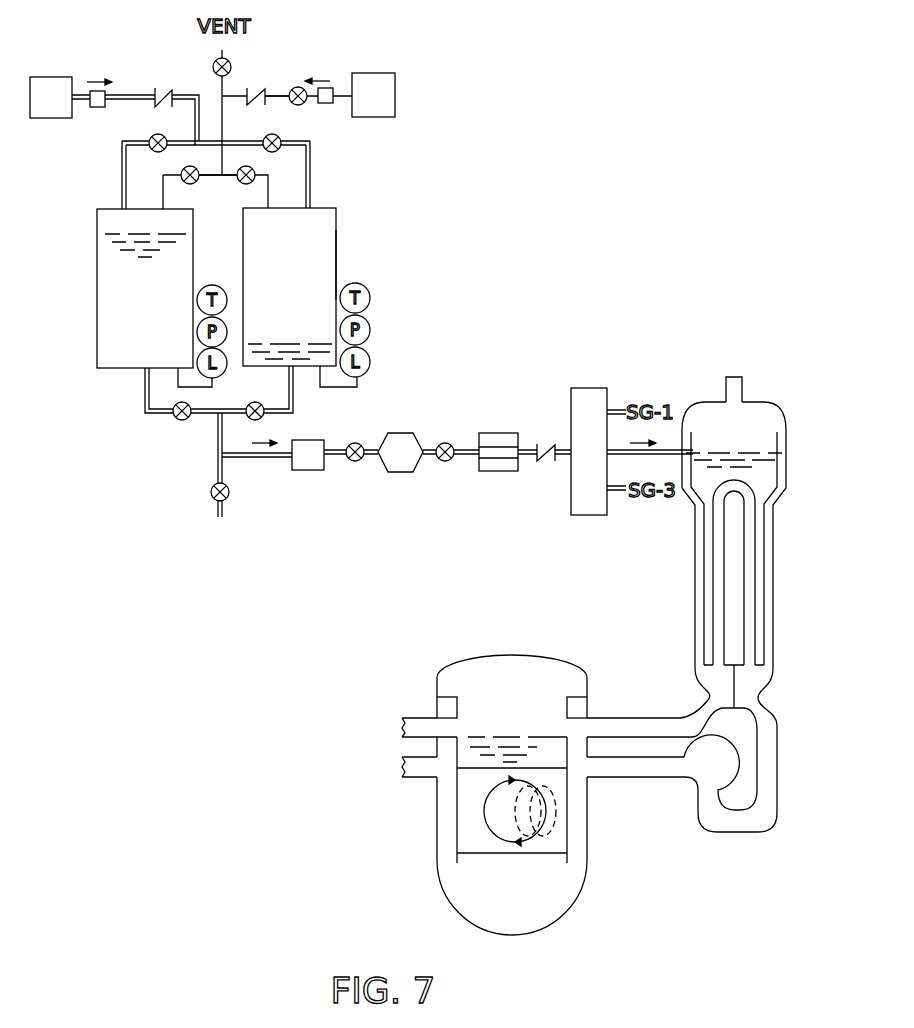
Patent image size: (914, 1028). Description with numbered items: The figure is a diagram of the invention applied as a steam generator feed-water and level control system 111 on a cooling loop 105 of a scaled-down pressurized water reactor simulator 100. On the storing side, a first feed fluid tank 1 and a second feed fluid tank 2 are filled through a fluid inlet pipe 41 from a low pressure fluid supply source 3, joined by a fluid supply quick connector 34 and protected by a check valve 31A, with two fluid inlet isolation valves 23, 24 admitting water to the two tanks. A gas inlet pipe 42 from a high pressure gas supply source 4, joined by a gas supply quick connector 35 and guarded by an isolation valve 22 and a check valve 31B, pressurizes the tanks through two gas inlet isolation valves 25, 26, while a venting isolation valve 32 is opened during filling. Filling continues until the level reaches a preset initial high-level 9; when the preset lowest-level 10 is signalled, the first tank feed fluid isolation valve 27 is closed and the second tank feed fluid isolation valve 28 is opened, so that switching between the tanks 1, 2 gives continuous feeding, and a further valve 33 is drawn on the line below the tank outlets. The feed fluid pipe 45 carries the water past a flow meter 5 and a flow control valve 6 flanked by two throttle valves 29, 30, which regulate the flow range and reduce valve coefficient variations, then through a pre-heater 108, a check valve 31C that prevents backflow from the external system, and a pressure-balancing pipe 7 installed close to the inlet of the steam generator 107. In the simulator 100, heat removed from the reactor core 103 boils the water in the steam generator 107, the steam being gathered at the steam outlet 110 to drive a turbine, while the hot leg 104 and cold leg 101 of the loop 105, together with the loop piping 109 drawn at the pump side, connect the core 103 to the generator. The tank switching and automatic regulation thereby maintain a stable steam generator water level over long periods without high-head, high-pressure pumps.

The first feed fluid tank 1 is at (136, 294).
The second feed fluid tank 2 is at (283, 291).
The fluid supply source 3 is at (44, 108).
The gas supply source 4 is at (366, 106).
The flow meter 5 is at (301, 466).
The flow control valve 6 is at (393, 463).
The pressure-balancing pipe 7 is at (582, 451).
The preset initial high-level 9 is at (108, 236).
The preset lowest-level 10 is at (272, 344).
The isolation valve 22 is at (305, 90).
The fluid inlet isolation valve 23 is at (153, 138).
The fluid inlet isolation valve 24 is at (281, 138).
The gas inlet isolation valve 25 is at (182, 174).
The gas inlet isolation valve 26 is at (256, 173).
The first tank feed fluid isolation valve 27 is at (178, 418).
The second tank feed fluid isolation valve 28 is at (264, 418).
The throttle valve 29 is at (358, 461).
The throttle valve 30 is at (442, 462).
The check valve 31A is at (160, 88).
The check valve 31B is at (258, 90).
The check valve 31C is at (543, 460).
The venting isolation valve 32 is at (213, 68).
The drain valve 33 is at (228, 496).
The fluid supply quick connector 34 is at (98, 107).
The gas supply quick connector 35 is at (328, 104).
The fluid inlet pipe 41 is at (122, 93).
The gas inlet pipe 42 is at (278, 92).
The feed fluid pipe 45 is at (282, 459).
The simulator 100 is at (488, 701).
The cold leg 101 is at (413, 780).
The reactor core 103 is at (463, 830).
The hot leg 104 is at (405, 716).
The cooling loop 105 is at (745, 752).
The steam generator 107 is at (700, 400).
The pre-heater 108 is at (500, 433).
The loop piping 109 is at (690, 782).
The steam outlet 110 is at (742, 388).
The steam generator feed-water and level control system 111 is at (342, 256).